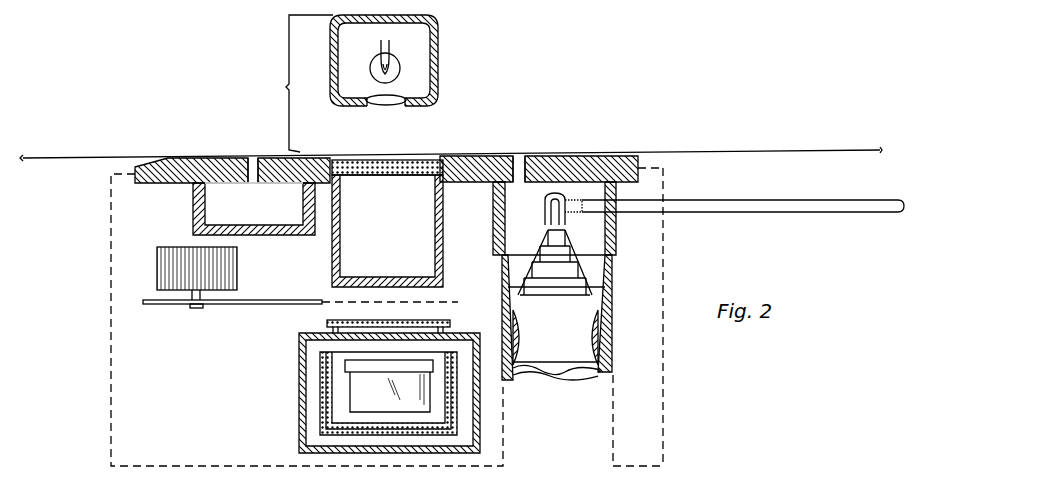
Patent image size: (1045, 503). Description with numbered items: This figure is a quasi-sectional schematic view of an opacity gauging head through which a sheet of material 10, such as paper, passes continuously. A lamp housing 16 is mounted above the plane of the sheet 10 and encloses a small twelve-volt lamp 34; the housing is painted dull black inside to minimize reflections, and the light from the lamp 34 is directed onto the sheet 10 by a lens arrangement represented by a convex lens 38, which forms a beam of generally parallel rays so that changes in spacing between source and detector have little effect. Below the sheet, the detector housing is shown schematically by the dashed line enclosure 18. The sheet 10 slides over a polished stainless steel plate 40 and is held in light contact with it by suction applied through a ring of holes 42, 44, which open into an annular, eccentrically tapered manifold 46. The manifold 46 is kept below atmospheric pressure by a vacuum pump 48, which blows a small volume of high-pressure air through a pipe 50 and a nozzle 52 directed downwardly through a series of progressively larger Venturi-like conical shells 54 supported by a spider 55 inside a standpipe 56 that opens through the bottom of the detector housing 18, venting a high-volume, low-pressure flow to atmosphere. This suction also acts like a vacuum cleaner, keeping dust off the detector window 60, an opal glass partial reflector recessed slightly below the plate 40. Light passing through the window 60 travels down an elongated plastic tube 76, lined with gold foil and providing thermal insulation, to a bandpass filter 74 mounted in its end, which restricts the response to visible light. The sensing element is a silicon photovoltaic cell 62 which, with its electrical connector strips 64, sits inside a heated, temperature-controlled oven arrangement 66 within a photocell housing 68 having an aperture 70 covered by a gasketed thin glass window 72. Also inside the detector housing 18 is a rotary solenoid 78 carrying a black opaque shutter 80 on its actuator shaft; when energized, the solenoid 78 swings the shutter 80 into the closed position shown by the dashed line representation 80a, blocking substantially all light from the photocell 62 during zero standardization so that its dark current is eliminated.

The sheet of material 10 is at (95, 157).
The lamp housing 16 is at (438, 25).
The detector housing 18 is at (663, 225).
The lamp 34 is at (400, 65).
The convex lens 38 is at (400, 90).
The polished stainless steel plate 40 is at (556, 158).
The suction hole 42 is at (252, 160).
The suction hole 44 is at (519, 157).
The annular eccentrically tapered manifold 46 is at (213, 208).
The vacuum pump 48 is at (580, 300).
The pipe 50 is at (812, 200).
The nozzle 52 is at (545, 207).
The Venturi-like conical shells 54 is at (558, 362).
The spider 55 is at (588, 275).
The standpipe 56 is at (612, 352).
The detector window 60 is at (356, 176).
The silicon photovoltaic cell 62 is at (360, 370).
The electrical connector strips 64 is at (340, 418).
The oven arrangement 66 is at (325, 400).
The photocell housing 68 is at (305, 442).
The aperture 70 is at (352, 387).
The thin glass window 72 is at (327, 318).
The bandpass filter 74 is at (387, 223).
The elongated plastic tube 76 is at (436, 232).
The rotary solenoid 78 is at (230, 276).
The shutter 80 is at (153, 305).
The closed position of shutter 80a is at (330, 298).